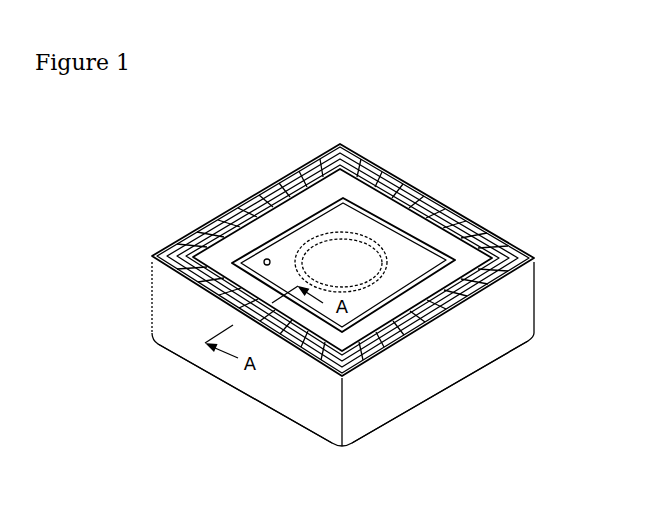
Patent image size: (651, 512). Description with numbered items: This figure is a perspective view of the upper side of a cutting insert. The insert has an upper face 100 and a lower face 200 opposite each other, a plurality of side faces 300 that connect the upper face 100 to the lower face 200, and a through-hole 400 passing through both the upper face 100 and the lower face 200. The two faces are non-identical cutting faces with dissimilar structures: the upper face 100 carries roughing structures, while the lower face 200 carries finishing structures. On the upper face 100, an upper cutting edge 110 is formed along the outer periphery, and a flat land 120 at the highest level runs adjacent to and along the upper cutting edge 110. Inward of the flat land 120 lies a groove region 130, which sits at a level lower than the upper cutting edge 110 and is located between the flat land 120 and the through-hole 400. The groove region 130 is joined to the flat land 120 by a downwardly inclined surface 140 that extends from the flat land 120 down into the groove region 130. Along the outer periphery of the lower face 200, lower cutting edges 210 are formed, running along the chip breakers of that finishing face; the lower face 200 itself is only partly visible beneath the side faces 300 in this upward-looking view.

The upper face 100 is at (345, 188).
The upper cutting edge 110 is at (400, 162).
The flat land 120 is at (420, 180).
The groove region 130 is at (468, 262).
The downwardly inclined surface 140 is at (430, 190).
The lower face 200 is at (450, 397).
The lower cutting edges 210 is at (382, 430).
The side faces 300 is at (258, 385).
The through-hole 400 is at (344, 260).